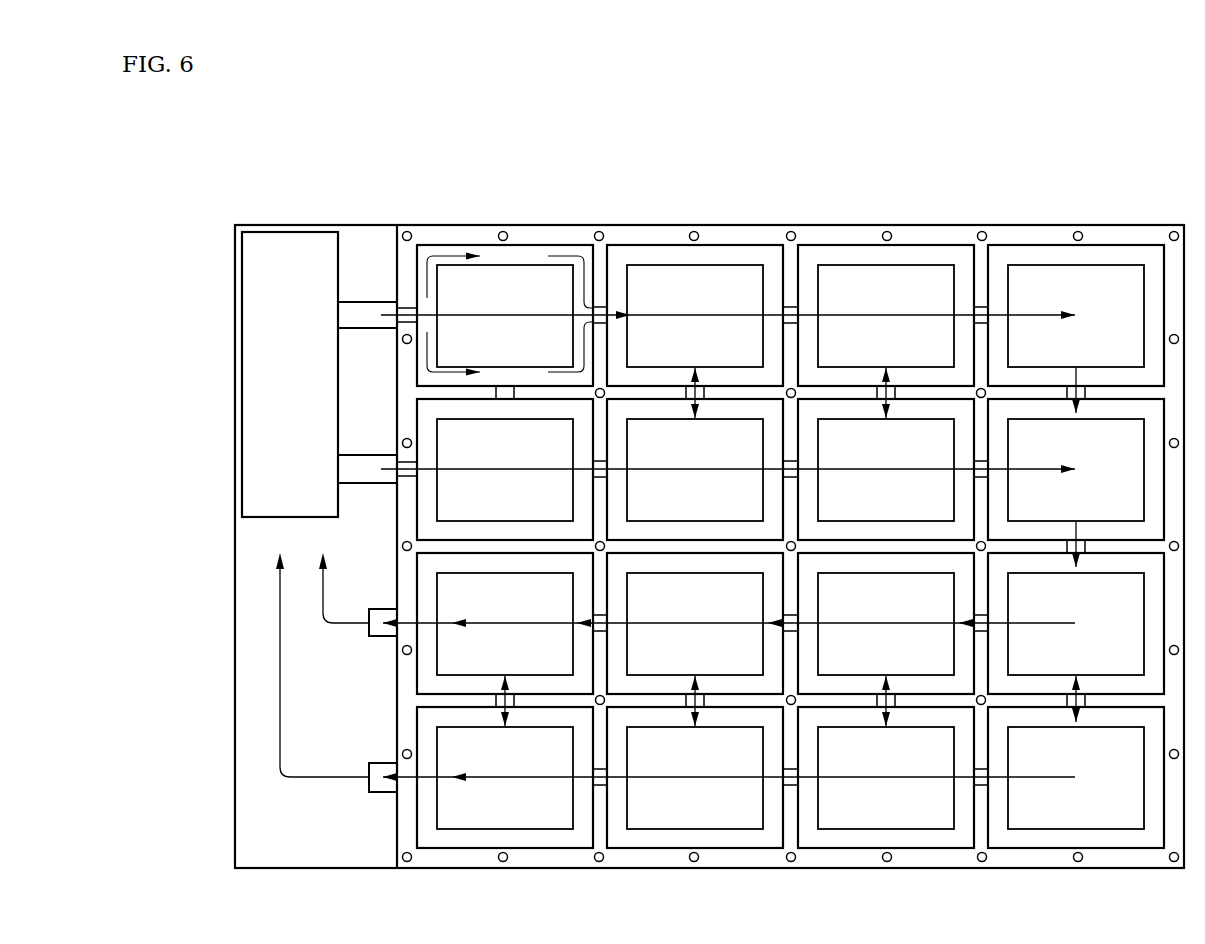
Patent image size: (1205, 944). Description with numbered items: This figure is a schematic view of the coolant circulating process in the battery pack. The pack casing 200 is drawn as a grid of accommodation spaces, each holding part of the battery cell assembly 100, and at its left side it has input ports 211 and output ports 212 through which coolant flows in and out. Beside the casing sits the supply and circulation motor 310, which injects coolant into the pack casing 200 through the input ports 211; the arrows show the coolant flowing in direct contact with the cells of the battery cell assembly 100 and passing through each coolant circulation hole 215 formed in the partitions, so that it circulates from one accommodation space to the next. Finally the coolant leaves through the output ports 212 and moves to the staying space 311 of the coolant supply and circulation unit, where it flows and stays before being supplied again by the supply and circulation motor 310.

The battery cell assembly 100 is at (715, 283).
The pack casing 200 is at (1106, 222).
The coolant circulation hole 215 is at (792, 313).
The supply and circulation motor 310 is at (358, 221).
The input port 211 is at (358, 323).
The output port 212 is at (378, 632).
The staying space 311 is at (328, 708).